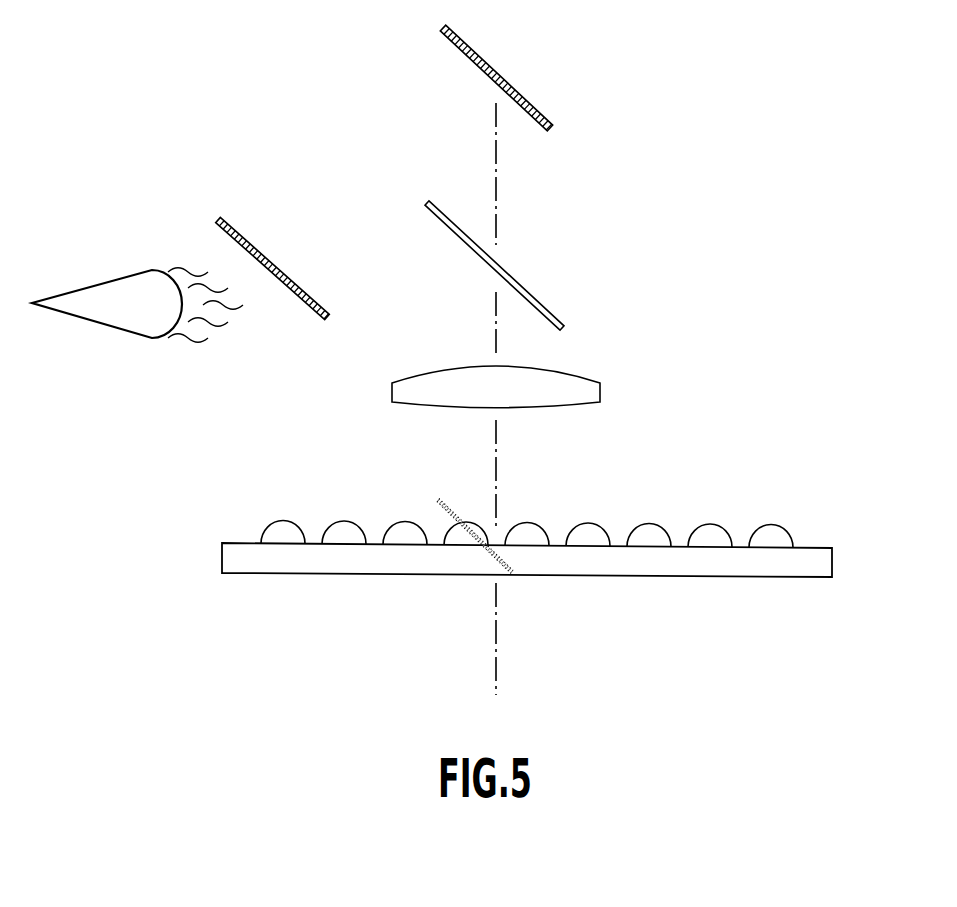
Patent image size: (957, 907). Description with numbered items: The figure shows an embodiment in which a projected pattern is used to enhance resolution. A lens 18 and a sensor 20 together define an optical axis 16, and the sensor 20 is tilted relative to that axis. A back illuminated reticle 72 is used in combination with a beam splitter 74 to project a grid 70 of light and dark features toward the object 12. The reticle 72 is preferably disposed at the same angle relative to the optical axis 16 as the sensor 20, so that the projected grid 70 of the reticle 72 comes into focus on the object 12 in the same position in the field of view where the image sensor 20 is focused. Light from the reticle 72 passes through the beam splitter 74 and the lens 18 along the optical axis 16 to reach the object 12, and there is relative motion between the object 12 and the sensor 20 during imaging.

The object 12 is at (245, 498).
The optical axis 16 is at (498, 173).
The lens 18 is at (585, 395).
The sensor 20 is at (425, 40).
The grid 70 is at (522, 590).
The back illuminated reticle 72 is at (198, 204).
The beam splitter 74 is at (563, 326).